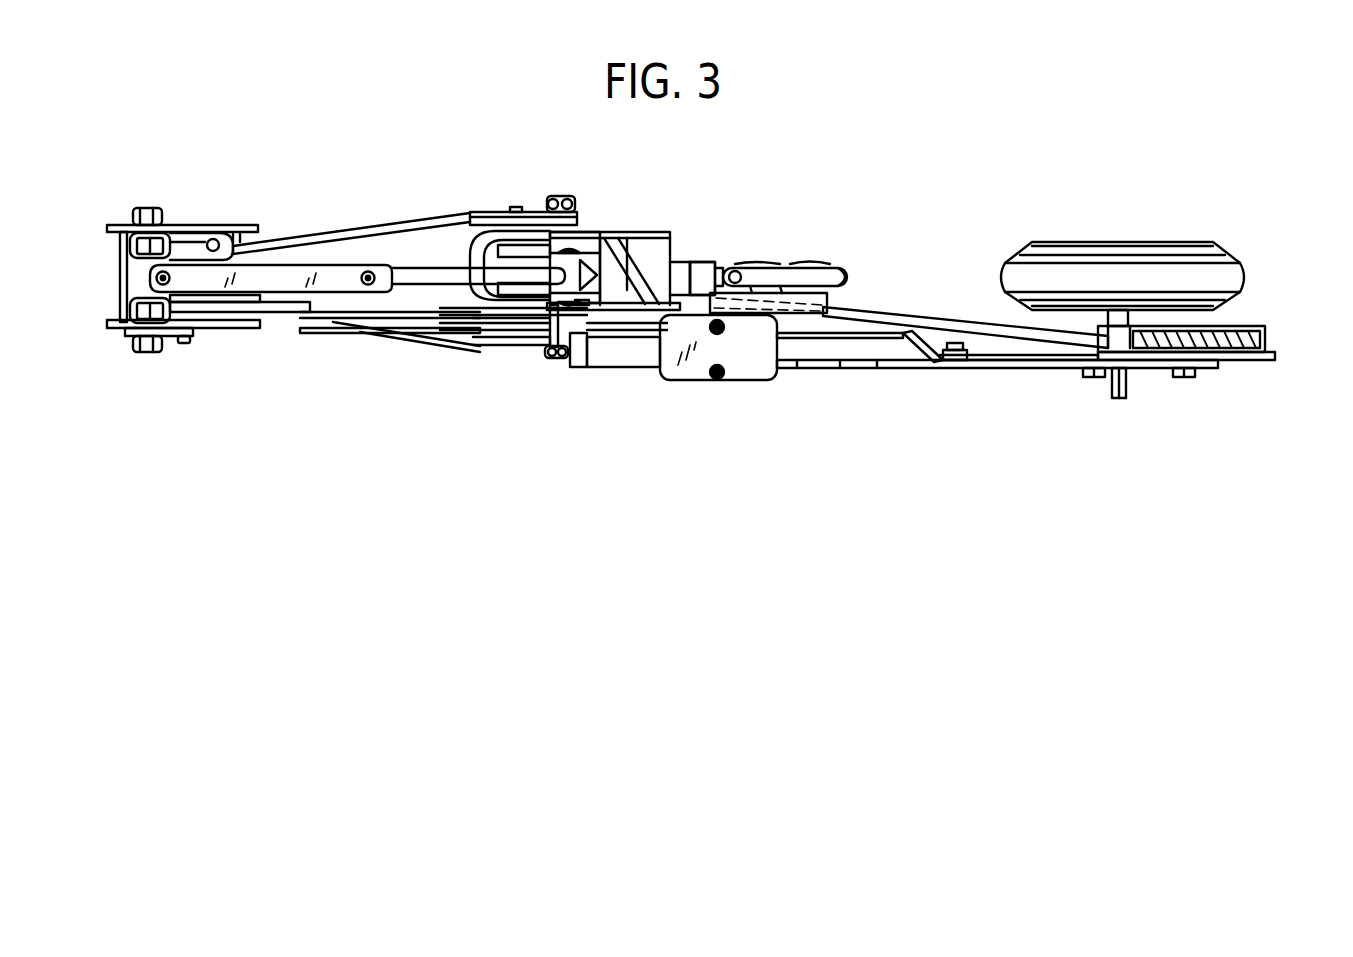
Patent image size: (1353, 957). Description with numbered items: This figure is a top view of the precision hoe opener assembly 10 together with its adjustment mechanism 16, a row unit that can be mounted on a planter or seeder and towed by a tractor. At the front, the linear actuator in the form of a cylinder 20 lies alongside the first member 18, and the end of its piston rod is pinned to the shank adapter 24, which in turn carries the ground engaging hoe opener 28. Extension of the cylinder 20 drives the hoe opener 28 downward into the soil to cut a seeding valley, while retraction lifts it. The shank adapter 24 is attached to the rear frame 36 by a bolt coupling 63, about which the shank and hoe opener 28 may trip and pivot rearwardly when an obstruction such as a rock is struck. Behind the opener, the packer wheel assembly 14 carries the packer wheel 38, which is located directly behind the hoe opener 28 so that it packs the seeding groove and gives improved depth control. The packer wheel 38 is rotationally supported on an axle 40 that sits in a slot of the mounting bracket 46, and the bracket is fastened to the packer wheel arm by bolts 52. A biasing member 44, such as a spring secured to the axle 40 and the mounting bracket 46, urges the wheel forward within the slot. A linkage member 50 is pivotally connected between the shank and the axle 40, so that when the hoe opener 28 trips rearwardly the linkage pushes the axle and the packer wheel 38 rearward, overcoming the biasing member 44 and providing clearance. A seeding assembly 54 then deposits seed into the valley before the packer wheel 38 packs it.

The precision hoe opener assembly 10 is at (967, 548).
The packer wheel assembly 14 is at (1216, 196).
The adjustment mechanism 16 is at (442, 237).
The first member 18 is at (360, 320).
The cylinder 20 is at (258, 268).
The shank adapter 24 is at (540, 300).
The hoe opener 28 is at (733, 237).
The rear frame 36 is at (675, 261).
The packer wheel 38 is at (1013, 252).
The axle 40 is at (1128, 395).
The biasing member 44 is at (1250, 330).
The mounting bracket 46 is at (1090, 370).
The linkage member 50 is at (880, 306).
The bolts 52 is at (1097, 380).
The seeding assembly 54 is at (825, 268).
The bolt coupling 63 is at (557, 203).